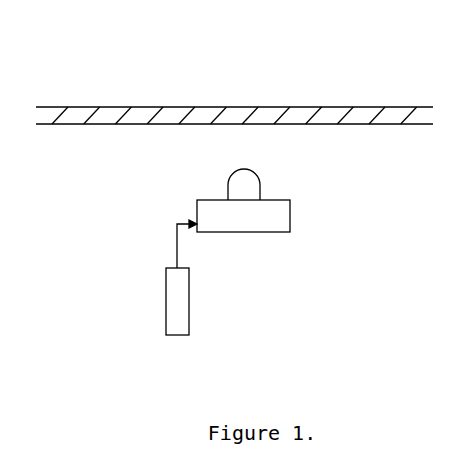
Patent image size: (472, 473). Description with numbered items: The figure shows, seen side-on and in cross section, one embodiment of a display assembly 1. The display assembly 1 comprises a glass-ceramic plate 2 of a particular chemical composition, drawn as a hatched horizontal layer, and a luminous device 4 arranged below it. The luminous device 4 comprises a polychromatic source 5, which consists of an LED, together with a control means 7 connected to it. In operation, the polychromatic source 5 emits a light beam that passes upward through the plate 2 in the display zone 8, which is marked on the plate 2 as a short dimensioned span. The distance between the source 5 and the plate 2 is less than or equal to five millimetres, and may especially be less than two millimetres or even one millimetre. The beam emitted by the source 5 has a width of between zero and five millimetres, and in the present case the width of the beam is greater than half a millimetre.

The display assembly 1 is at (356, 80).
The glass-ceramic plate 2 is at (97, 107).
The luminous device 4 is at (141, 230).
The polychromatic source 5 is at (260, 183).
The control means 7 is at (167, 310).
The display zone 8 is at (263, 87).